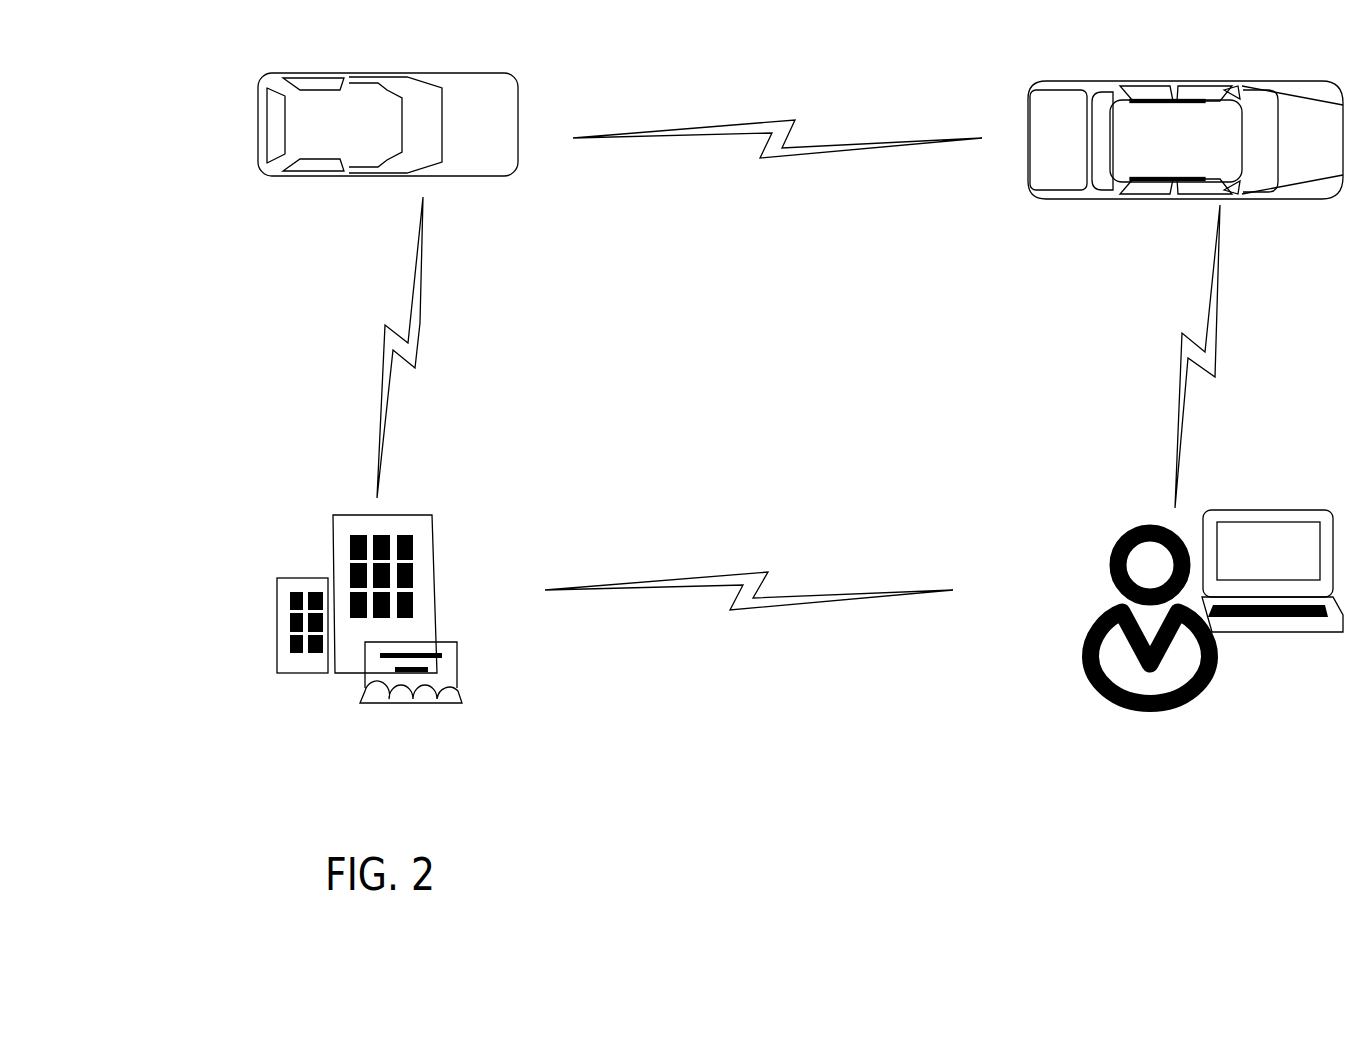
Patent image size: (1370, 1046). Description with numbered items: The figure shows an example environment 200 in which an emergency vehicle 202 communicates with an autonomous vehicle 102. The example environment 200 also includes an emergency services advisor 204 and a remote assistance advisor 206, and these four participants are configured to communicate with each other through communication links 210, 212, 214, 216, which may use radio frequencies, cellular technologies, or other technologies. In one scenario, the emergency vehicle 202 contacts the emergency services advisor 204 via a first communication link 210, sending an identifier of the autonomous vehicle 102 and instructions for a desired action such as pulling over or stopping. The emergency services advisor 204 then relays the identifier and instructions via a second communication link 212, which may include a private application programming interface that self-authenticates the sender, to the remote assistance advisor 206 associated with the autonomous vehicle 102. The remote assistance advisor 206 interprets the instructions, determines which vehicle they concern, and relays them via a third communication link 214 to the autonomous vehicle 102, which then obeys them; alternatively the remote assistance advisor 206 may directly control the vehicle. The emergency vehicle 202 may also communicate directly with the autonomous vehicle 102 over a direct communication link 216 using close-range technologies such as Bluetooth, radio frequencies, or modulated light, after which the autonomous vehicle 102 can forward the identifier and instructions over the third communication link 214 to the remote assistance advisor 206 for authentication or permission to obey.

The example environment 200 is at (198, 51).
The emergency vehicle 202 is at (360, 133).
The autonomous vehicle 102 is at (1193, 152).
The emergency services advisor 204 is at (385, 640).
The remote assistance advisor 206 is at (1122, 712).
The first communication link 210 is at (420, 323).
The second communication link 212 is at (743, 572).
The third communication link 214 is at (1190, 352).
The direct communication link 216 is at (767, 155).